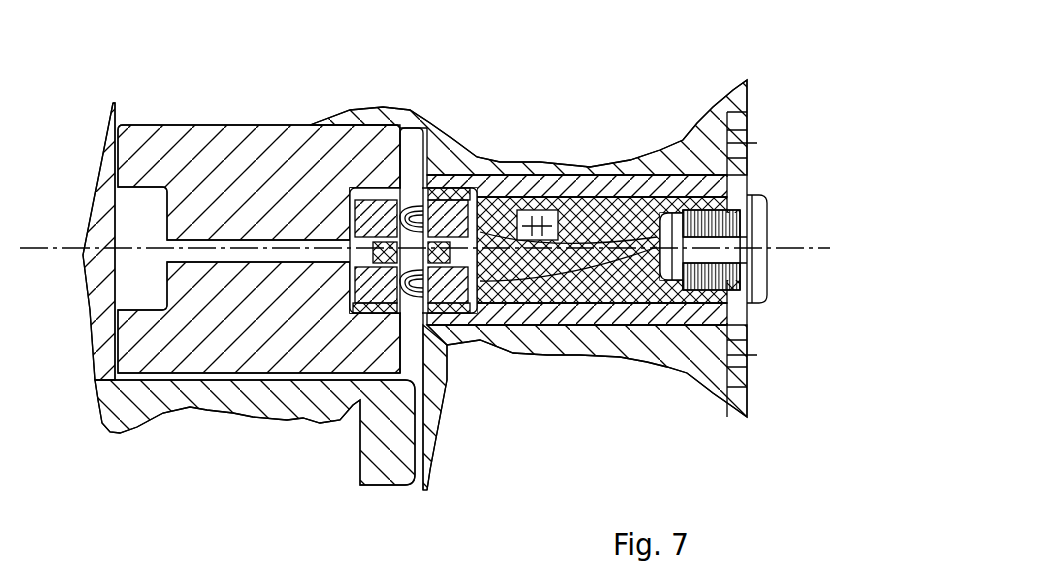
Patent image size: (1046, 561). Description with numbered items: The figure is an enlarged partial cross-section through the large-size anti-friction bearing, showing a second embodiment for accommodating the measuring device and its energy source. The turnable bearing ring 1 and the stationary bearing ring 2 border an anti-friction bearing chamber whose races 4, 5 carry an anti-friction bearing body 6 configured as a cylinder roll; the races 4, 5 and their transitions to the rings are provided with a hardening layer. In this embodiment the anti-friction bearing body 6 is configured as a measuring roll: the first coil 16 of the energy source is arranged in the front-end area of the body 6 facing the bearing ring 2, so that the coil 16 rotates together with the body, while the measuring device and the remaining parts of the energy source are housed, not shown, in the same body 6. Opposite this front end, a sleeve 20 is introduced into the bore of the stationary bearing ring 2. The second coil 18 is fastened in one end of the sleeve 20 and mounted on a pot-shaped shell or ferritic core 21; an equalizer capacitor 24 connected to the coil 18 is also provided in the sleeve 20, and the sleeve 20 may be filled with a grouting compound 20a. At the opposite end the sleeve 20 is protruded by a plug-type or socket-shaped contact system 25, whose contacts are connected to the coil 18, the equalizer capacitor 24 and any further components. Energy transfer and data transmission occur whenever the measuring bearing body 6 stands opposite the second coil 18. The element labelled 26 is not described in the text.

The turnable bearing ring 1 is at (250, 403).
The stationary bearing ring 2 is at (694, 140).
The race 4 is at (103, 379).
The race 5 is at (410, 127).
The anti-friction bearing body 6 is at (253, 167).
The first coil 16 is at (385, 283).
The second coil 18 is at (437, 360).
The sleeve 20 is at (530, 190).
The grouting compound 20a is at (582, 205).
The ferritic core 21 is at (457, 222).
The equalizer capacitor 24 is at (553, 241).
The contact system 25 is at (695, 283).
The bearing sleeve 26 is at (375, 290).